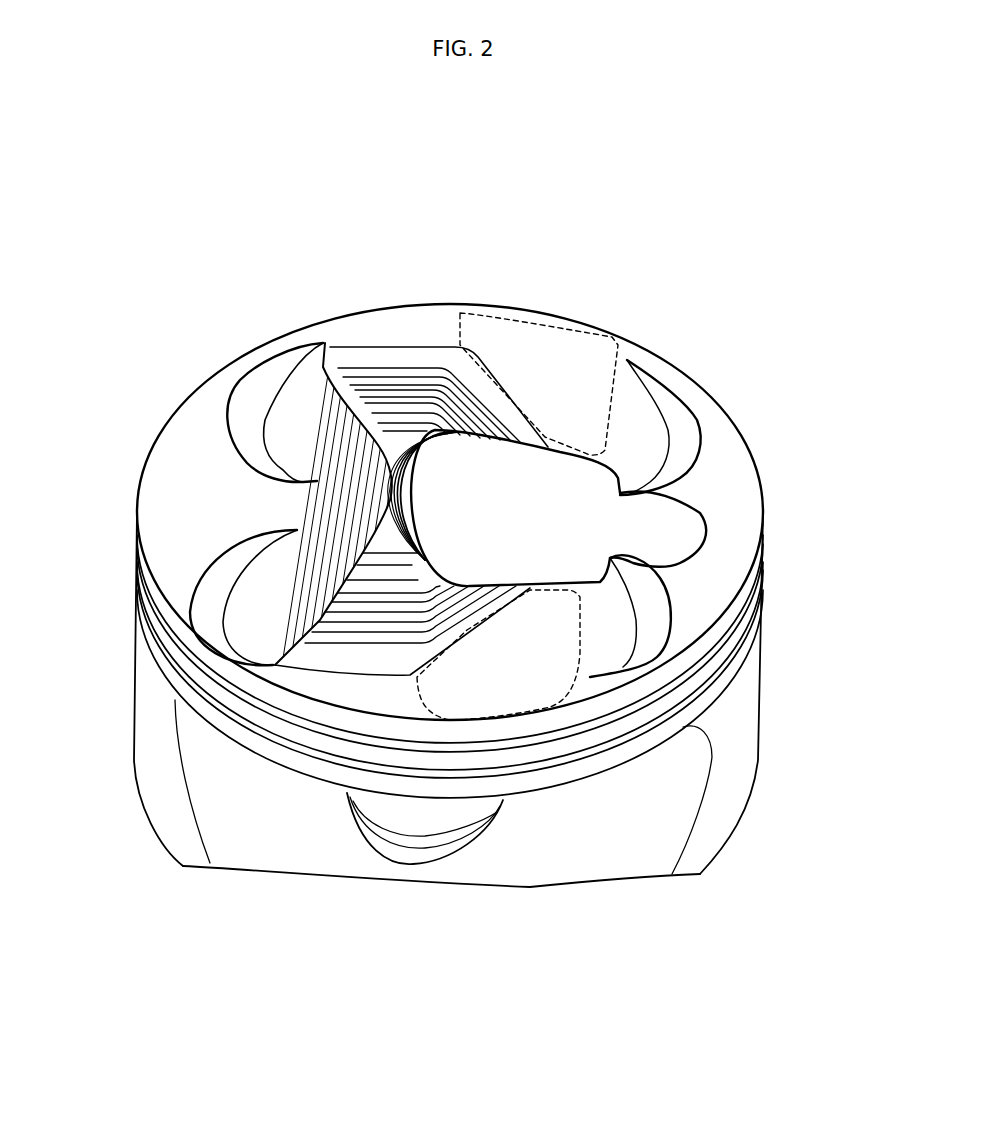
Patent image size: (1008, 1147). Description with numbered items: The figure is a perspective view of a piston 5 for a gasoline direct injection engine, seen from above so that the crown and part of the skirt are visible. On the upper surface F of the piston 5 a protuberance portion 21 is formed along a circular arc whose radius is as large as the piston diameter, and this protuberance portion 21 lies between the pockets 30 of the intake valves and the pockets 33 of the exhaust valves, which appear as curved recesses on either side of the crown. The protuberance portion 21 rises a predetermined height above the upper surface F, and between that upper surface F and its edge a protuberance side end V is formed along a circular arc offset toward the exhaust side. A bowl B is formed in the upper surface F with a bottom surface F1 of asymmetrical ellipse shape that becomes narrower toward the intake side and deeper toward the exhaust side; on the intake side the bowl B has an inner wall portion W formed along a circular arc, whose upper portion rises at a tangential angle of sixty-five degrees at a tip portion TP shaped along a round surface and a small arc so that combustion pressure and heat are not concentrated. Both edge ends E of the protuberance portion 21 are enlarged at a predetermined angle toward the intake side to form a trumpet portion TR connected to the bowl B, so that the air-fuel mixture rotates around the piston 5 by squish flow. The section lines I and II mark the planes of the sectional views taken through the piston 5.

The piston 5 is at (770, 417).
The protuberance portion 21 is at (413, 412).
The pockets of intake valves 30 is at (677, 410).
The pockets of exhaust valves 33 is at (240, 407).
The tip portion TP is at (380, 478).
The protuberance side end V is at (352, 342).
The section line I is at (311, 937).
The section line II is at (880, 548).
The edge ends E is at (503, 372).
The trumpet portion TR is at (545, 318).
The inner wall portion W is at (423, 460).
The bowl B is at (508, 478).
The upper surface F is at (720, 503).
The bottom surface F1 is at (580, 528).